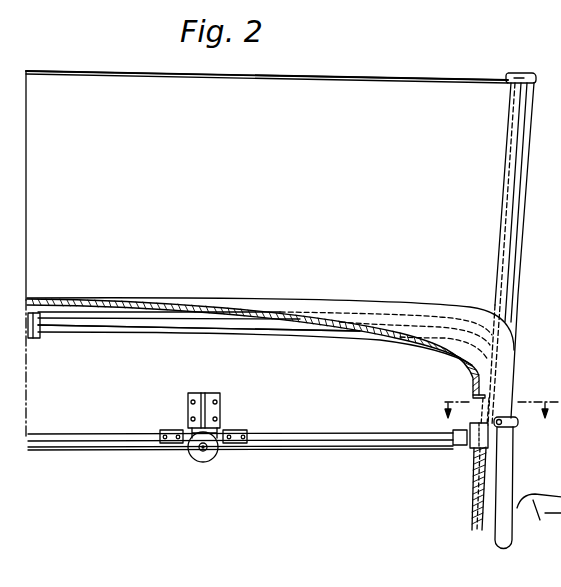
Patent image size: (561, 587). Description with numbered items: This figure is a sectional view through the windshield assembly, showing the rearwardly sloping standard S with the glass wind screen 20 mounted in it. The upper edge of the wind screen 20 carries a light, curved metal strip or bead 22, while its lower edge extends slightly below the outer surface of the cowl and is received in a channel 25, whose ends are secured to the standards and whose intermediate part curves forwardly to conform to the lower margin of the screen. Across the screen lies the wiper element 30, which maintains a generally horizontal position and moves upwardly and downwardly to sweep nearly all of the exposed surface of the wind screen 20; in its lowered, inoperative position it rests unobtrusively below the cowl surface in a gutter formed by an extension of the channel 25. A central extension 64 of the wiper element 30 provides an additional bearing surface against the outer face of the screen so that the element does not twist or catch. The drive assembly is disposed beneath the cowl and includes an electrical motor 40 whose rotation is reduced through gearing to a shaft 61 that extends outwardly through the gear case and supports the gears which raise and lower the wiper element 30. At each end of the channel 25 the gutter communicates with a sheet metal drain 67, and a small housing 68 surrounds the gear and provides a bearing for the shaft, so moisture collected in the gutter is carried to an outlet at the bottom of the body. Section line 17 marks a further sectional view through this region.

The glass wind screen 20 is at (336, 84).
The curved metal strip or bead 22 is at (112, 70).
The channel 25 is at (148, 322).
The wiper element 30 is at (331, 300).
The electrical motor 40 is at (204, 462).
The shaft 61 is at (118, 437).
The central extension 64 is at (29, 299).
The sheet metal drain 67 is at (474, 470).
The housing 68 is at (468, 448).
The section line 17 is at (492, 404).
The standard S is at (528, 222).